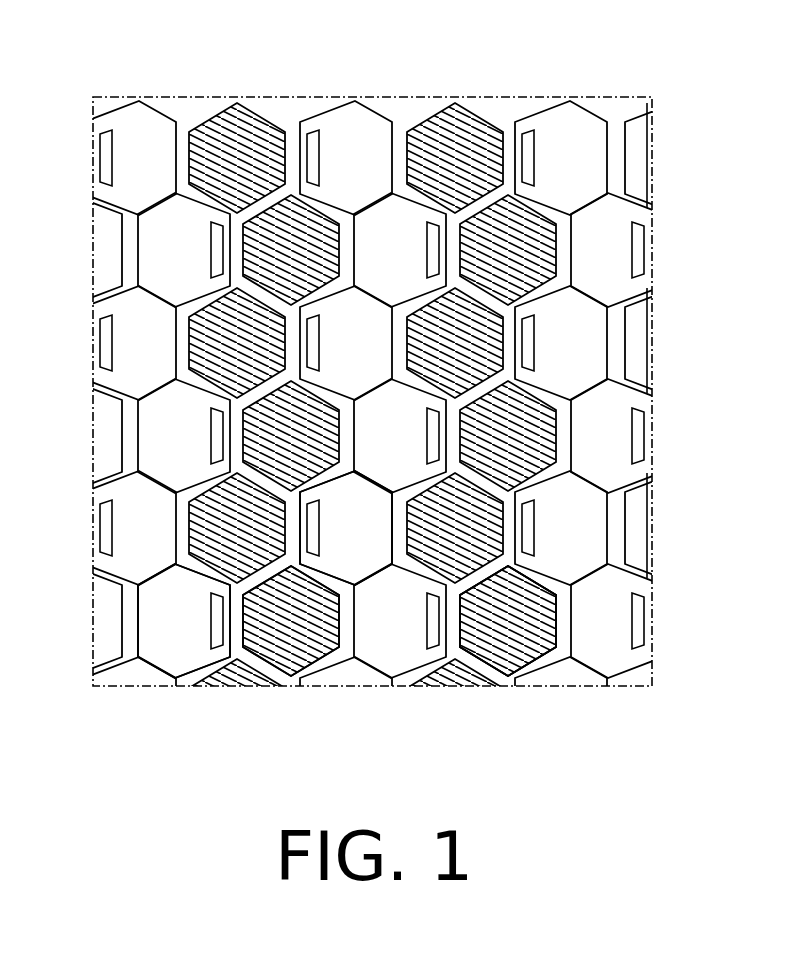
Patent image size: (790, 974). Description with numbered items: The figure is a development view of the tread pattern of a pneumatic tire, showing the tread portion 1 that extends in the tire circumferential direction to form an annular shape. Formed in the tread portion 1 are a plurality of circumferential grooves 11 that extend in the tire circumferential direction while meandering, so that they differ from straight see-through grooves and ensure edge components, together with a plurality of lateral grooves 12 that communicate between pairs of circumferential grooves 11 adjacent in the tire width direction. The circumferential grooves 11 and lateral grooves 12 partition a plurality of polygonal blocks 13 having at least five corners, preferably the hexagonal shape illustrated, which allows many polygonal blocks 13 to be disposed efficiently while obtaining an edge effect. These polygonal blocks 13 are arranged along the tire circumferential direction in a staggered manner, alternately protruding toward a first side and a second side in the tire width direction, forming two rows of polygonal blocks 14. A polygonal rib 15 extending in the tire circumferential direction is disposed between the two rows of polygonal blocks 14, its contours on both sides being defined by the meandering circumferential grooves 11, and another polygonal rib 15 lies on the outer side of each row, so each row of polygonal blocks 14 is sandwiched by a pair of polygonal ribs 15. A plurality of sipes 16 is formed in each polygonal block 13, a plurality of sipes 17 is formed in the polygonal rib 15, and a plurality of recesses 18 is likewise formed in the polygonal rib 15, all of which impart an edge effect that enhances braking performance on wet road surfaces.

The tread portion 1 is at (578, 100).
The circumferential groove 11 is at (180, 143).
The lateral groove 12 is at (262, 205).
The polygonal block 13 is at (308, 662).
The row of polygonal blocks 14 is at (444, 666).
The polygonal rib 15 is at (170, 652).
The sipe 16 is at (272, 637).
The sipe 17 is at (137, 607).
The recess 18 is at (190, 340).